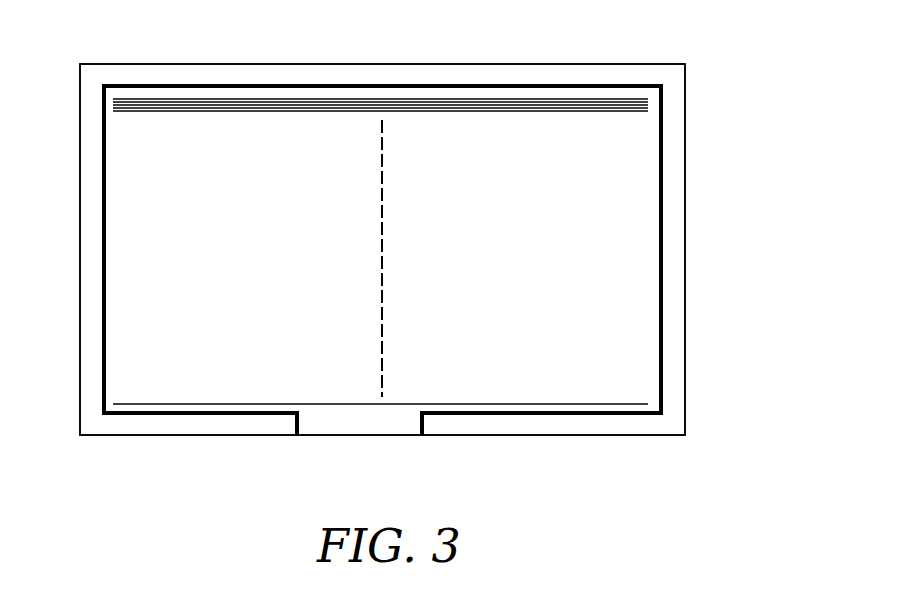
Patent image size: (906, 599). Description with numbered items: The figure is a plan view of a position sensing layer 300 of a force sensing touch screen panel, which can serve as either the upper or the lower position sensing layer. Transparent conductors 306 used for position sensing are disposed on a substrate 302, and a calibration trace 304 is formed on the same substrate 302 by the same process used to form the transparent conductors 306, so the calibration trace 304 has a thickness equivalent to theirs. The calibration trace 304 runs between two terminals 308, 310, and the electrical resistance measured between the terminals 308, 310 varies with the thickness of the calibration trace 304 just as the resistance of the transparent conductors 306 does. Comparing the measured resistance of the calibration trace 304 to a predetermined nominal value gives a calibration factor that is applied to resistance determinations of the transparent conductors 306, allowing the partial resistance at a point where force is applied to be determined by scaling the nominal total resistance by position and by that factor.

The position sensing layer 300 is at (736, 504).
The substrate 302 is at (685, 78).
The calibration trace 304 is at (663, 155).
The transparent conductors 306 is at (537, 99).
The terminal 308 is at (297, 437).
The terminal 310 is at (422, 437).